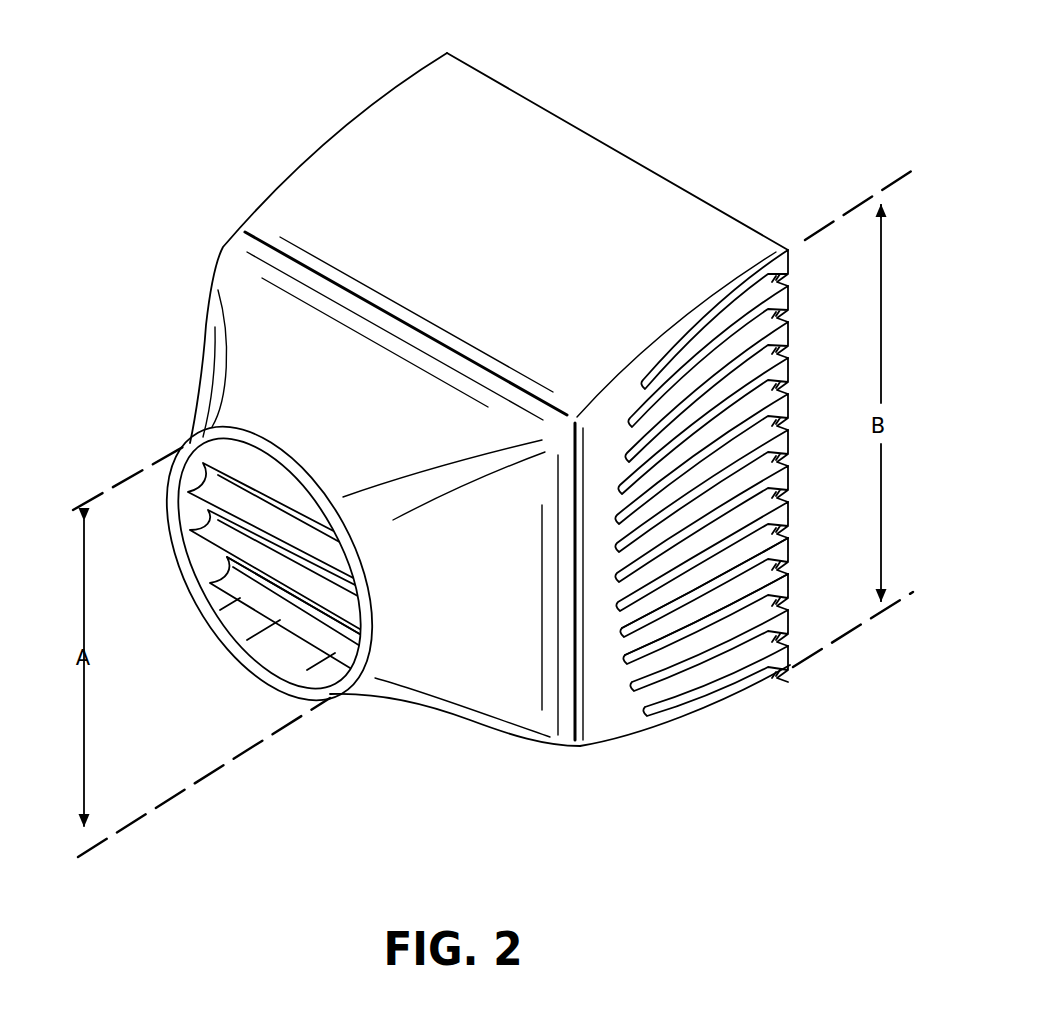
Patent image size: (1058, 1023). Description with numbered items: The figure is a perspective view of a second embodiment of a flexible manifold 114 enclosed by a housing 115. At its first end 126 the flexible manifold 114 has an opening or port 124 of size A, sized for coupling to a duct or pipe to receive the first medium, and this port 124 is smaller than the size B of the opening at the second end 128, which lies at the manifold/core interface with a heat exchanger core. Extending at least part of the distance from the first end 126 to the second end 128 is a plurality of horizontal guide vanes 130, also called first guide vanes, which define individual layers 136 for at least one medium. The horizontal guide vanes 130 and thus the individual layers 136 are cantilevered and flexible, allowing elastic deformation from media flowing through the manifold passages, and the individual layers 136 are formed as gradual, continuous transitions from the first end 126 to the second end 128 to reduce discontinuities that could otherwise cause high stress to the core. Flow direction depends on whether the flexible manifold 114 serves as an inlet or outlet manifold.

The flexible manifold 114 is at (715, 94).
The housing 115 is at (473, 225).
The port 124 is at (184, 610).
The first end 126 is at (161, 406).
The second end 128 is at (822, 375).
The horizontal guide vanes 130 is at (291, 570).
The individual layers 136 is at (310, 612).